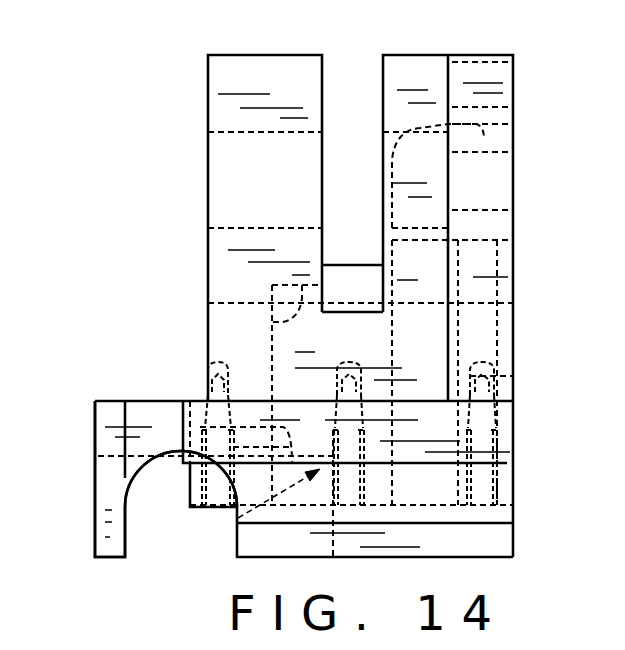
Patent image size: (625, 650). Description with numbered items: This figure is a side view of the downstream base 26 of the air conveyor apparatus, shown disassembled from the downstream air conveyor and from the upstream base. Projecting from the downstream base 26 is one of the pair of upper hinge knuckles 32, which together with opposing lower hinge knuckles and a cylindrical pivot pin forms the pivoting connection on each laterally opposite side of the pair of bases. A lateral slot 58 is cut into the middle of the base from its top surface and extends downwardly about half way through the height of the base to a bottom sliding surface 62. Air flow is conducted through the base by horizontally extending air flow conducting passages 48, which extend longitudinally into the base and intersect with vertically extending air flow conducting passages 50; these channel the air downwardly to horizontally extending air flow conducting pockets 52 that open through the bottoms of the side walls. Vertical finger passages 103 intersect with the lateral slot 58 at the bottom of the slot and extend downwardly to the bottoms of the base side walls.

The downstream base 26 is at (270, 74).
The lateral slot 58 is at (347, 90).
The bottom sliding surface 62 is at (353, 264).
The horizontally extending air flow conducting passages 48 is at (484, 139).
The vertically extending air flow conducting passages 50 is at (497, 260).
The vertical finger passages 103 is at (272, 322).
The upper hinge knuckles 32 is at (113, 492).
The horizontally extending air flow conducting pockets 52 is at (233, 503).